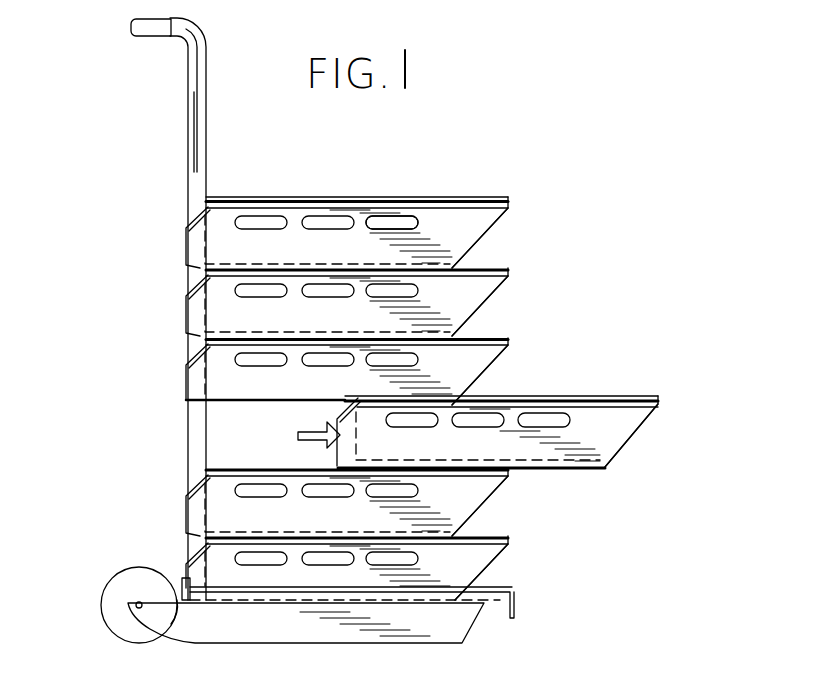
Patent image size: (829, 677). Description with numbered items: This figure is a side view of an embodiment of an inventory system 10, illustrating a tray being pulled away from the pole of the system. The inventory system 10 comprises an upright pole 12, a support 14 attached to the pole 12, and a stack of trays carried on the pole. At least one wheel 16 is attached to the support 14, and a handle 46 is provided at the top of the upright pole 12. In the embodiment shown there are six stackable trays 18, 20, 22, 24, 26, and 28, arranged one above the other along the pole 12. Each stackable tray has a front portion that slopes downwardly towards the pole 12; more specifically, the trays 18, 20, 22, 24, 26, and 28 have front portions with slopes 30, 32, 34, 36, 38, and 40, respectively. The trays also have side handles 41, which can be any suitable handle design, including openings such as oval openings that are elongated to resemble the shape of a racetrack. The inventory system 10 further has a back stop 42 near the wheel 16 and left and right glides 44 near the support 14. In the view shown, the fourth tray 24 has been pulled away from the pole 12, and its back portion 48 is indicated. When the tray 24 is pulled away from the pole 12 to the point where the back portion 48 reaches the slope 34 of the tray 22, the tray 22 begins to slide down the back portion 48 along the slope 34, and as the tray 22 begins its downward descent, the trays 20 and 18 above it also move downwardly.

The inventory system 10 is at (260, 165).
The upright pole 12 is at (188, 180).
The support 14 is at (466, 628).
The wheel 16 is at (108, 624).
The stackable tray 18 is at (473, 238).
The stackable tray 20 is at (464, 307).
The stackable tray 22 is at (474, 374).
The stackable tray 24 is at (497, 432).
The stackable tray 26 is at (347, 503).
The stackable tray 28 is at (476, 568).
The slope 30 is at (497, 214).
The slope 32 is at (497, 282).
The slope 34 is at (493, 352).
The slope 36 is at (648, 423).
The slope 38 is at (497, 488).
The slope 40 is at (500, 548).
The side handle 41 is at (405, 218).
The back stop 42 is at (184, 584).
The glides 44 is at (500, 589).
The handle 46 is at (157, 37).
The back portion 48 is at (337, 446).